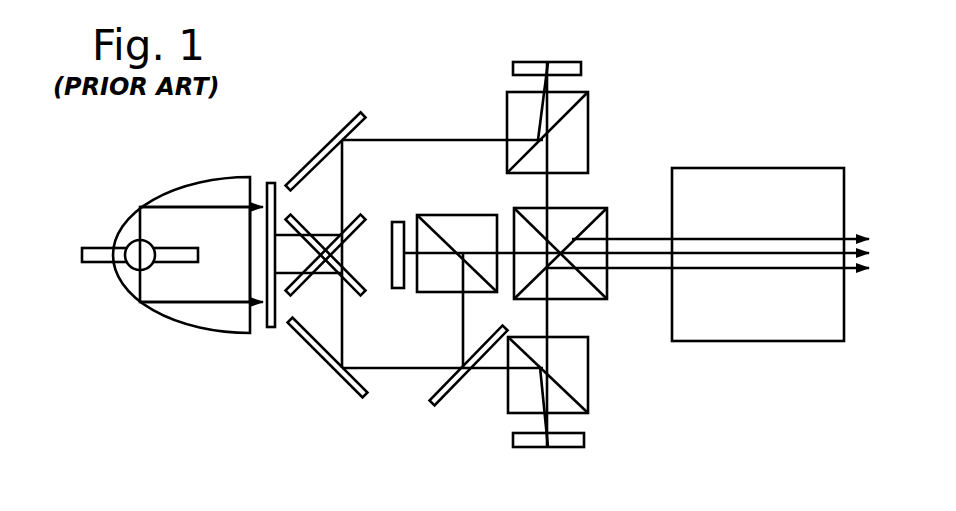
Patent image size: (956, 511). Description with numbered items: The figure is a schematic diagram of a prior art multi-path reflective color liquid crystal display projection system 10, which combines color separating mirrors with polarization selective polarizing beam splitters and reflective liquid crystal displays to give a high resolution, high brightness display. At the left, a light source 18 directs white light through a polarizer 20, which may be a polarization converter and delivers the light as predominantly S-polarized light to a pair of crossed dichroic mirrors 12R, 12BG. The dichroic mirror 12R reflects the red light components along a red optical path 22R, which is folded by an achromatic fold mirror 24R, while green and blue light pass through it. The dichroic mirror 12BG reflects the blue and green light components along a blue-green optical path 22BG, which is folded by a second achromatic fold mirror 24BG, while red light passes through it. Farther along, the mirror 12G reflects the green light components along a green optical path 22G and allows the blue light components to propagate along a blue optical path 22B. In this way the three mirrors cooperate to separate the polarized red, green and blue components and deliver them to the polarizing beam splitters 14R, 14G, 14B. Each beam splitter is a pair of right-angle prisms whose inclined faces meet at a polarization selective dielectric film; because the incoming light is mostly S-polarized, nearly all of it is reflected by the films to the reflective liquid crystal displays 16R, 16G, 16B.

The multi-path reflective color liquid crystal display projection system 10 is at (296, 128).
The light source 18 is at (161, 346).
The polarizer 20 is at (271, 333).
The achromatic fold mirror 24R is at (349, 116).
The dichroic mirror 12R is at (353, 221).
The dichroic mirror 12BG is at (353, 291).
The achromatic fold mirror 24BG is at (321, 357).
The red optical path 22R is at (344, 180).
The blue-green optical path 22BG is at (344, 342).
The reflective liquid crystal display 16R is at (575, 60).
The polarizing beam splitter 14R is at (589, 115).
The reflective liquid crystal display 16G is at (397, 290).
The polarizing beam splitter 14G is at (468, 198).
The green optical path 22G is at (466, 332).
The color separating mirror 12G is at (436, 388).
The blue optical path 22B is at (489, 371).
The polarizing beam splitter 14B is at (590, 385).
The reflective liquid crystal display 16B is at (573, 449).